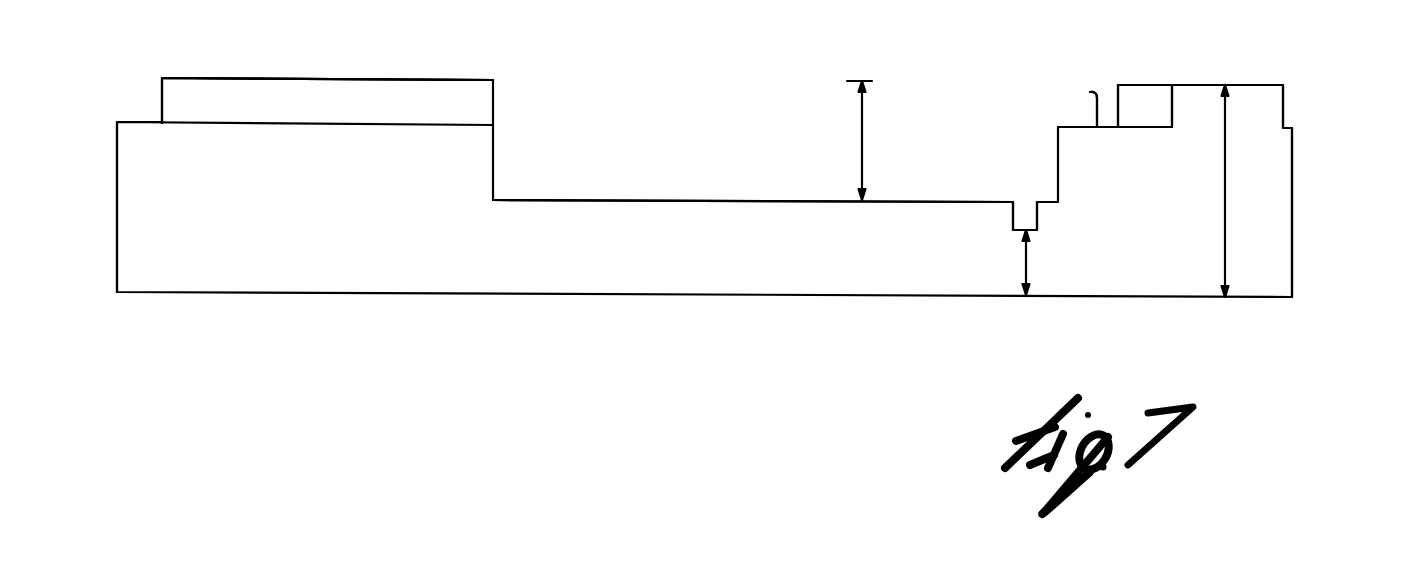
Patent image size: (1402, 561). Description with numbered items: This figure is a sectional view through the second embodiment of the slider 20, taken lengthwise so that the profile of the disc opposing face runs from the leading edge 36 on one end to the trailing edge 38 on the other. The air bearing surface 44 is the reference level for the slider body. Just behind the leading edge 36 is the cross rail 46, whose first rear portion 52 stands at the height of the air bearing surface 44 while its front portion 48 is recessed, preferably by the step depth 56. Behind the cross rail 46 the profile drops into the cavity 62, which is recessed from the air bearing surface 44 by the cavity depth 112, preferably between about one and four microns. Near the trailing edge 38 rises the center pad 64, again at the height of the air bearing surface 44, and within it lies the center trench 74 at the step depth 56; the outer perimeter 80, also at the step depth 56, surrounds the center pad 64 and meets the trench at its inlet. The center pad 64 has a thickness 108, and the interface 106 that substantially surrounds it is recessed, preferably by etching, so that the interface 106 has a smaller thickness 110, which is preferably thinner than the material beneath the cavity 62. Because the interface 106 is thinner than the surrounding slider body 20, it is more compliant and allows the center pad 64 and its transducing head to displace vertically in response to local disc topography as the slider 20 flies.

The slider 20 is at (358, 320).
The leading edge 36 is at (117, 188).
The trailing edge 38 is at (1295, 183).
The air bearing surface 44 is at (1197, 85).
The cross rail 46 is at (322, 80).
The front portion 48 is at (133, 120).
The first rear portion 52 is at (233, 97).
The step depth 56 is at (1099, 97).
The cavity 62 is at (685, 200).
The center pad 64 is at (1247, 88).
The center trench 74 is at (1063, 123).
The outer perimeter 80 is at (1290, 125).
The interface 106 is at (1023, 203).
The thickness 108 is at (1230, 215).
The thickness 110 is at (1025, 258).
The cavity depth 112 is at (863, 142).